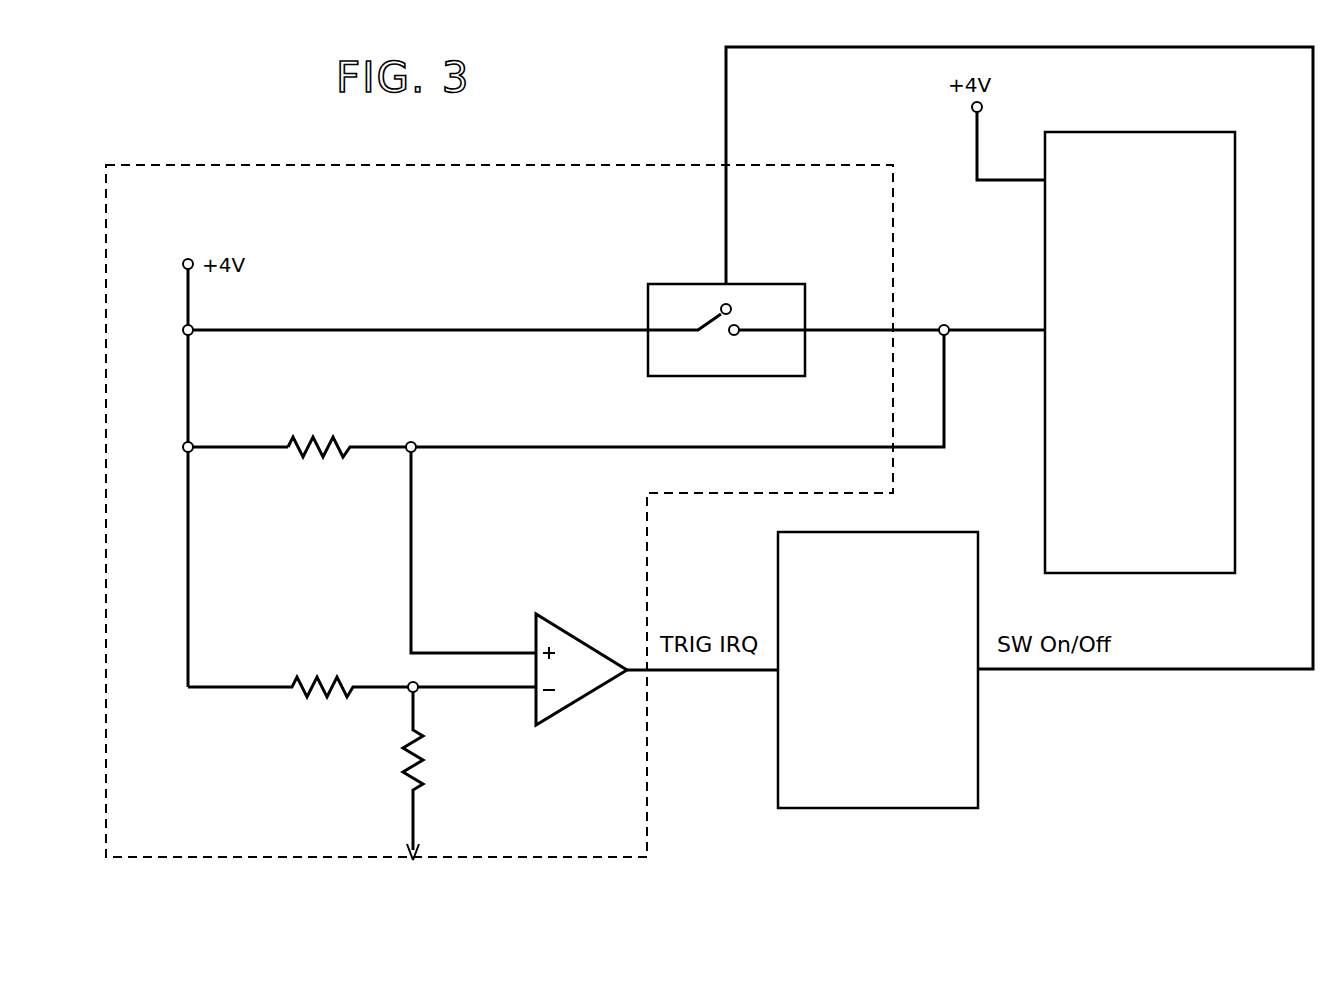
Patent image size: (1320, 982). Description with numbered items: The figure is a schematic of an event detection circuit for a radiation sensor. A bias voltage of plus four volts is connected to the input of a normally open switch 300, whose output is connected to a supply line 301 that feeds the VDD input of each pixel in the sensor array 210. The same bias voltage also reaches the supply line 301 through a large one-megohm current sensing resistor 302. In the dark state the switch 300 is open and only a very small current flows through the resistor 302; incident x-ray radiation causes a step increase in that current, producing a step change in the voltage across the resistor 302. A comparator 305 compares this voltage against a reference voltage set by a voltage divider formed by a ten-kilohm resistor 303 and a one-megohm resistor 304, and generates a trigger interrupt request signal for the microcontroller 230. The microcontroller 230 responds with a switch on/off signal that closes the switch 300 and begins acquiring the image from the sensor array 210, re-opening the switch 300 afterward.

The sensor array 210 is at (1075, 132).
The microcontroller 230 is at (871, 808).
The normally open switch 300 is at (753, 284).
The supply line 301 is at (990, 325).
The current sensing resistor 302 is at (342, 445).
The resistor 303 is at (306, 692).
The resistor 304 is at (420, 783).
The comparator 305 is at (565, 712).